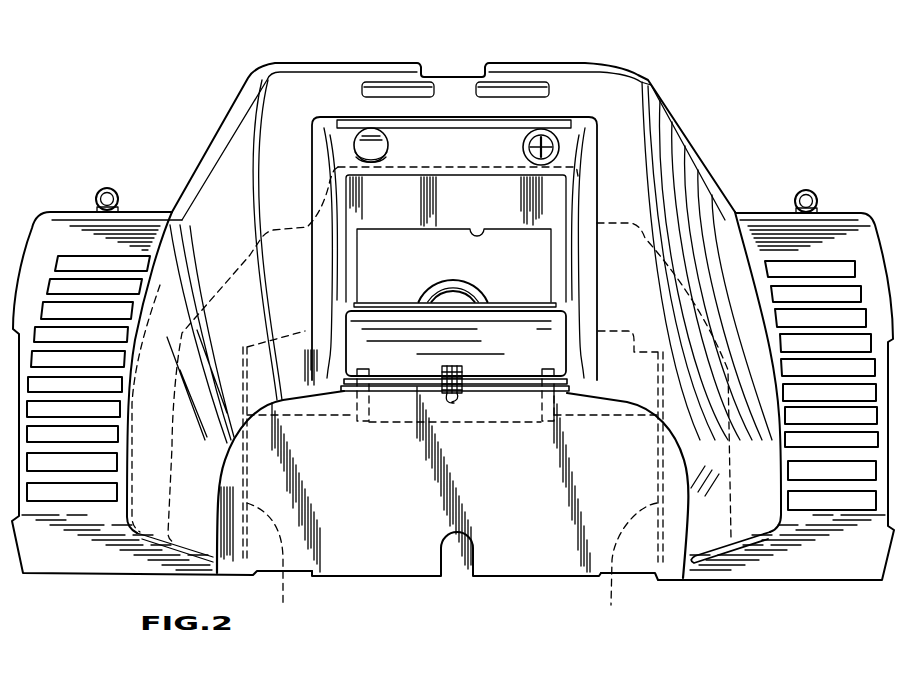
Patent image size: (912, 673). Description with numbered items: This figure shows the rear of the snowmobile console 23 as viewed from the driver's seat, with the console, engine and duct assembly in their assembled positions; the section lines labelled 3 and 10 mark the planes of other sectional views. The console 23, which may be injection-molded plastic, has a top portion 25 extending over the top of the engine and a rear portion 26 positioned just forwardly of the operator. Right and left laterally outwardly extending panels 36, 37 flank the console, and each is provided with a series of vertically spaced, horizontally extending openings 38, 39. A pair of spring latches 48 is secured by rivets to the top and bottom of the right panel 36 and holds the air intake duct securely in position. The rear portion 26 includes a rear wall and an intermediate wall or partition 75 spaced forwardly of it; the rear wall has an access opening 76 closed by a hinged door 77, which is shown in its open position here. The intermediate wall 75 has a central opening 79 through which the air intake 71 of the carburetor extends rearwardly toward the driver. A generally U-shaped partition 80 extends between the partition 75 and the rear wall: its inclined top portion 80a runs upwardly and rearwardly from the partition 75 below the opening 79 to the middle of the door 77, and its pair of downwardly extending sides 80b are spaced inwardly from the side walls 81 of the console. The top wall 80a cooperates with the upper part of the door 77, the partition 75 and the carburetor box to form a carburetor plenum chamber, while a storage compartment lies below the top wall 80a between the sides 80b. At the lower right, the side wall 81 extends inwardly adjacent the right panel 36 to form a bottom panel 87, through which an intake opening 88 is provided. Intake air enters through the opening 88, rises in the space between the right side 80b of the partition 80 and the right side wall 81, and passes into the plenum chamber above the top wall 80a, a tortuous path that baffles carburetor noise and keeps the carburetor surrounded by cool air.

The section line 10- 10 is at (504, 8).
The section line 3- 3 is at (28, 192).
The console 23 is at (531, 565).
The top portion 25 is at (598, 56).
The rear portion 26 is at (367, 558).
The right hand panel 36 is at (780, 222).
The left hand panel 37 is at (122, 222).
The openings 38 is at (826, 470).
The openings 39 is at (70, 465).
The spring latches 48 is at (106, 188).
The air intake 71 is at (447, 287).
The intermediate wall 75 is at (414, 203).
The access opening 76 is at (565, 220).
The door 77 is at (405, 392).
The central opening 79 is at (487, 229).
The U-shaped partition 80 is at (522, 349).
The inclined top portion 80a is at (590, 407).
The downwardly extending sides 80b is at (452, 570).
The side walls 81 is at (701, 200).
The bottom panel 87 is at (757, 530).
The intake opening 88 is at (706, 558).